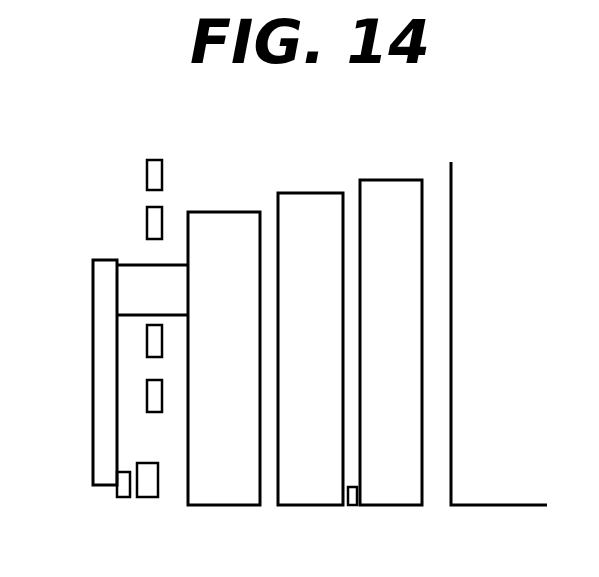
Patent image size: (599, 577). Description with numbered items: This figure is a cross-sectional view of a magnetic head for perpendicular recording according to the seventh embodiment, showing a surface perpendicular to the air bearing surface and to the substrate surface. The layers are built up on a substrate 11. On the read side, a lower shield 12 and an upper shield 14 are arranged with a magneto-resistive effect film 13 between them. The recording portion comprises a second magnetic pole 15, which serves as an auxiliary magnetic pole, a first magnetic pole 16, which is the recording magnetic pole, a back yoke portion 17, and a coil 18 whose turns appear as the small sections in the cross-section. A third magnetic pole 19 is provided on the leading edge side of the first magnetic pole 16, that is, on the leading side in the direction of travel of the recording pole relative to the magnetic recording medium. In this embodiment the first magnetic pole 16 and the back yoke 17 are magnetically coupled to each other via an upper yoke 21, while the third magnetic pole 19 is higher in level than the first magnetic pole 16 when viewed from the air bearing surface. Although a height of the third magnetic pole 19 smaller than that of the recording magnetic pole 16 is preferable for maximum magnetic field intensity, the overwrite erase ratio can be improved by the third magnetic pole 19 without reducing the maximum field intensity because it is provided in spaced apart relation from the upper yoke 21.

The substrate 11 is at (480, 442).
The lower shield 12 is at (396, 505).
The magneto-resistive effect film 13 is at (351, 505).
The upper shield 14 is at (310, 505).
The second magnetic pole 15 is at (224, 505).
The first magnetic pole 16 is at (117, 495).
The back yoke portion 17 is at (140, 277).
The coil 18 is at (156, 173).
The third magnetic pole 19 is at (145, 497).
The upper yoke 21 is at (105, 375).